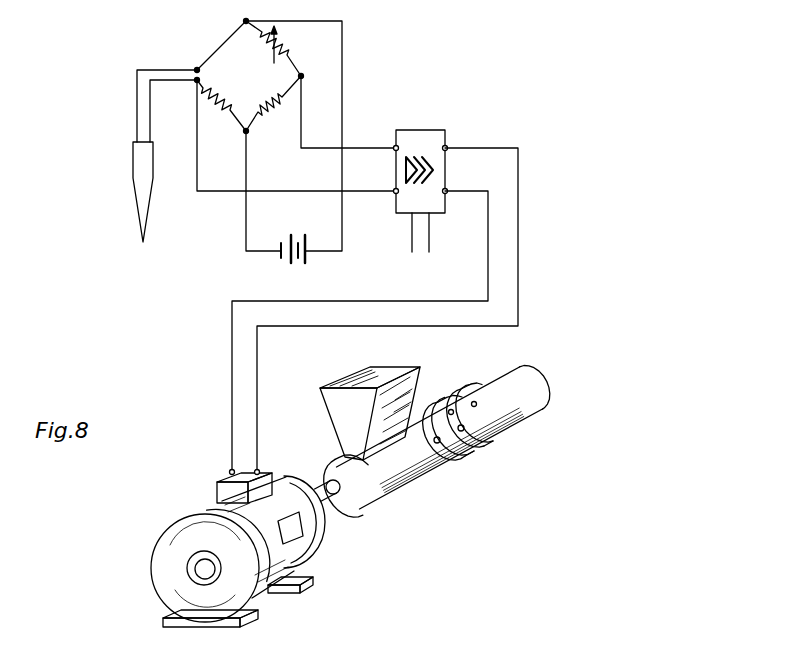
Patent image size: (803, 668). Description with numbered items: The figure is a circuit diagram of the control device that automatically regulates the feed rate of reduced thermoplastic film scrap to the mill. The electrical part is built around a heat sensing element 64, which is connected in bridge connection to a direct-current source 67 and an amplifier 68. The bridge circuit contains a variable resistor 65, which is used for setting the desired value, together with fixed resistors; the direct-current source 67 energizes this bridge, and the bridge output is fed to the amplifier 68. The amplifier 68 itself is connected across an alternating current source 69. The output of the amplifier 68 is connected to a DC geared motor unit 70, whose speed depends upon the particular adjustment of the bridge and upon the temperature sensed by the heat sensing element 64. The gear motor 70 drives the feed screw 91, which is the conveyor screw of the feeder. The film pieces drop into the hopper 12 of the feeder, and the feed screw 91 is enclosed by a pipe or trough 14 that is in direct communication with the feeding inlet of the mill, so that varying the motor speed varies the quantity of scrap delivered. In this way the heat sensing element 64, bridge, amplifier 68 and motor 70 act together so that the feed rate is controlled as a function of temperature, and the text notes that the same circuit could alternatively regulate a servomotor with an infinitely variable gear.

The hopper 12 is at (412, 386).
The pipe or trough 14 is at (517, 403).
The heat sensing element 64 is at (142, 177).
The variable resistor 65 is at (265, 43).
The direct-current source 67 is at (303, 256).
The amplifier 68 is at (433, 138).
The alternating current source 69 is at (422, 247).
The DC geared motor unit 70 is at (303, 563).
The feed screw 91 is at (458, 450).